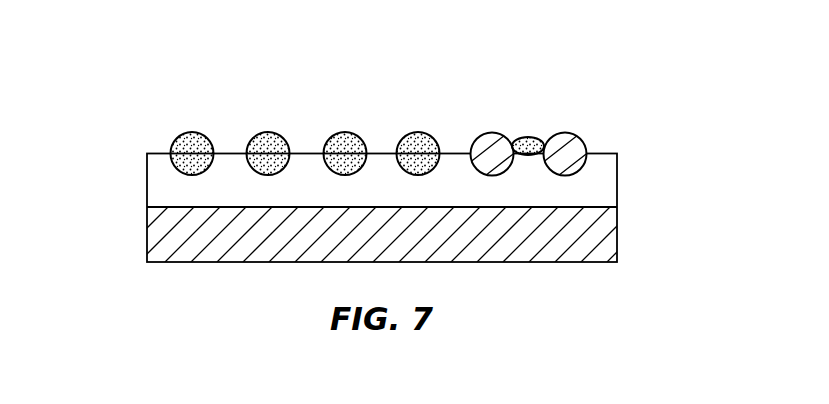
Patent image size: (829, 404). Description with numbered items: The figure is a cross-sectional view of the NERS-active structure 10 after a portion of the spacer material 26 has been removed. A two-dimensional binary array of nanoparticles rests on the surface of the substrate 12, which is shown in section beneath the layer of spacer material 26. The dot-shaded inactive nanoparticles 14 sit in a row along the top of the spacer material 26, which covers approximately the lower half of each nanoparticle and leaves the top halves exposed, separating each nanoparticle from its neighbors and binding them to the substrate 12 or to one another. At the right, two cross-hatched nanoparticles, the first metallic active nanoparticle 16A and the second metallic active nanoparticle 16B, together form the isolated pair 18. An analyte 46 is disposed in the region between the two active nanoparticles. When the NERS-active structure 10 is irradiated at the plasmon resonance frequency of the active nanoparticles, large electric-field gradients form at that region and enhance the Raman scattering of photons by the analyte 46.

The NERS-active structure 10 is at (662, 106).
The substrate 12 is at (158, 225).
The inactive nanoparticles 14 is at (188, 133).
The first metallic active nanoparticle 16A is at (572, 175).
The second metallic active nanoparticle 16B is at (495, 177).
The isolated pair 18 is at (607, 231).
The spacer material 26 is at (600, 183).
The analyte 46 is at (530, 137).